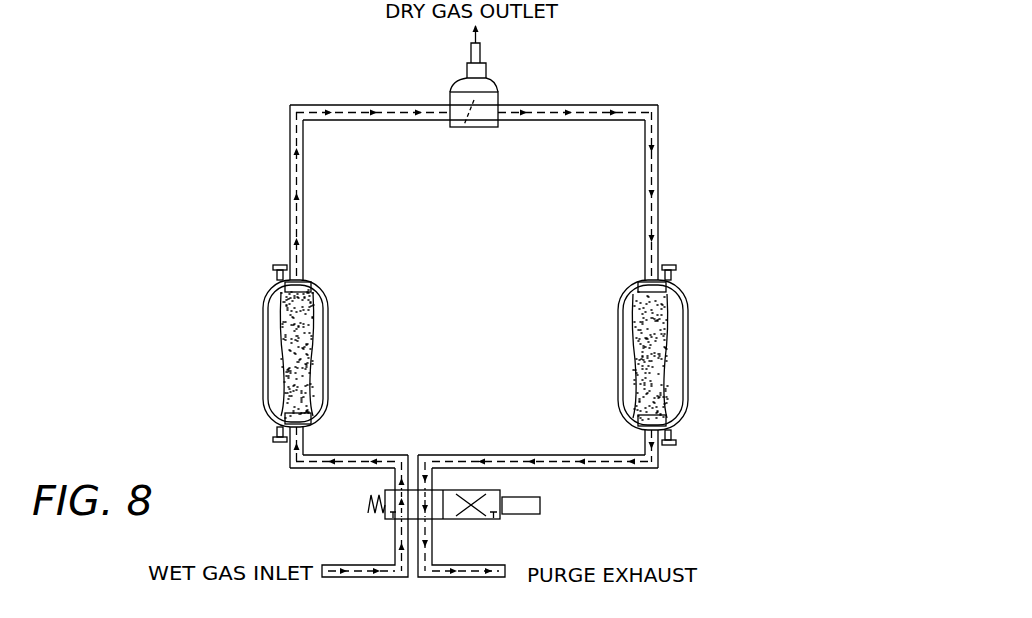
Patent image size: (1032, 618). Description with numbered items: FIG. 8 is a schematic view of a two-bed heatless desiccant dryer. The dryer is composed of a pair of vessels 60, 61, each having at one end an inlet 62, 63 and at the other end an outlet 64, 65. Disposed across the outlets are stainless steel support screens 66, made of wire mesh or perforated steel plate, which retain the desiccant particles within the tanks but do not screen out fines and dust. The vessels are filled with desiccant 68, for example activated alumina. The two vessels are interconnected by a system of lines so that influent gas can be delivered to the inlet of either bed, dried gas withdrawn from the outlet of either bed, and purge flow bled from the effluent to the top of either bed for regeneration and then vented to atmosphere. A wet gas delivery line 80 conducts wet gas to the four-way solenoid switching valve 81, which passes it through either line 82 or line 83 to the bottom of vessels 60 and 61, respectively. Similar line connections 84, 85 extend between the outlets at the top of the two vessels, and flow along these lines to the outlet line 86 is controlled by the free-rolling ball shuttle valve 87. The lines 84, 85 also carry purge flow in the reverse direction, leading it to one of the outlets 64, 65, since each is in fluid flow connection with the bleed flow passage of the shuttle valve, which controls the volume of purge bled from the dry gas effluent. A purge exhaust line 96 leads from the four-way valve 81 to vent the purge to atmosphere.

The vessel 60 is at (262, 356).
The vessel 61 is at (688, 366).
The inlet 62 is at (306, 433).
The inlet 63 is at (645, 428).
The outlet 64 is at (305, 282).
The outlet 65 is at (645, 283).
The support screens 66 is at (285, 292).
The desiccant 68 is at (285, 340).
The wet gas delivery line 80 is at (380, 565).
The four-way solenoid switching valve 81 is at (500, 520).
The line 82 is at (335, 470).
The line 83 is at (602, 468).
The line connection 84 is at (337, 105).
The line connection 85 is at (612, 105).
The outlet line 86 is at (482, 50).
The free-rolling ball shuttle valve 87 is at (498, 90).
The purge exhaust line 96 is at (446, 565).